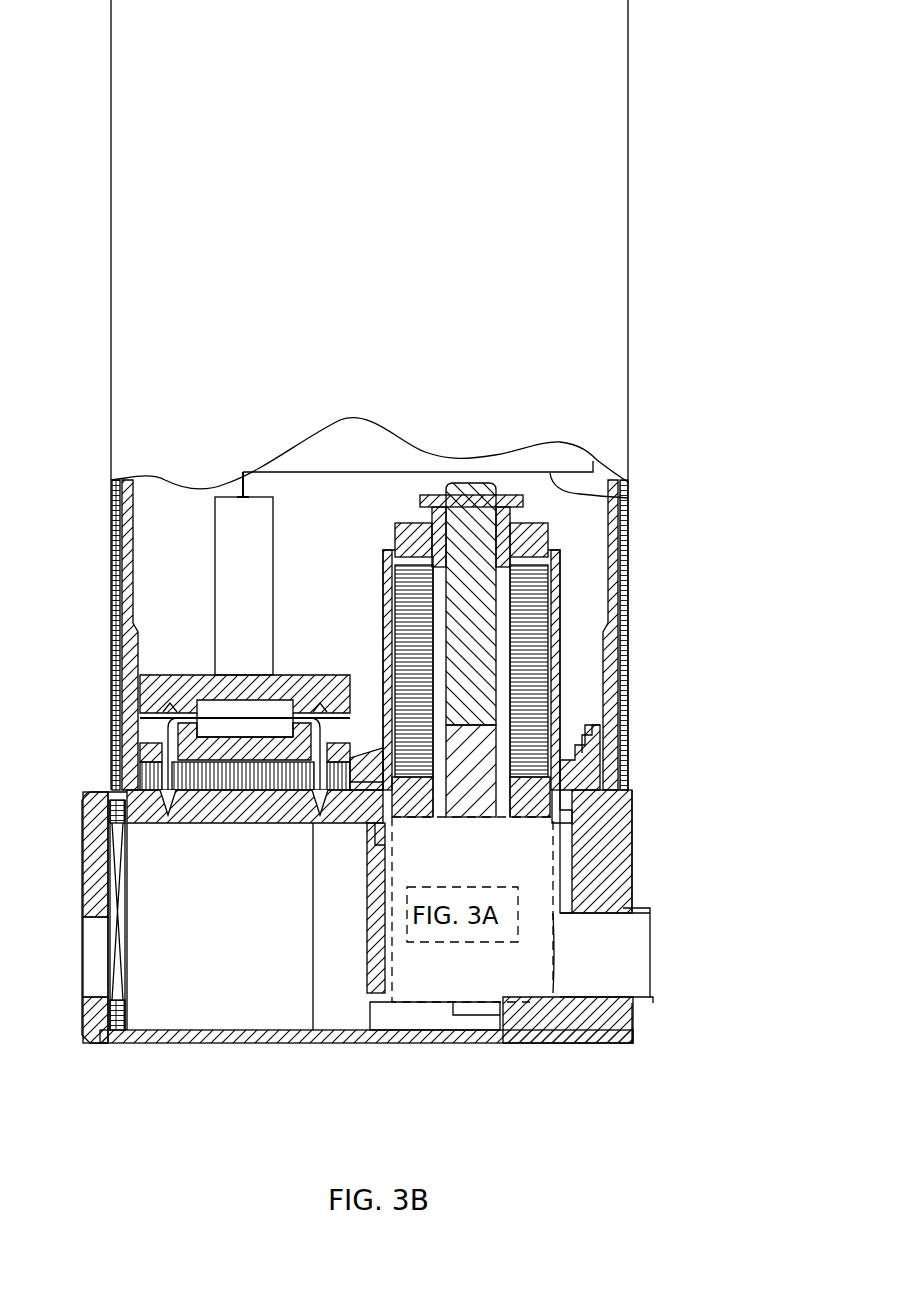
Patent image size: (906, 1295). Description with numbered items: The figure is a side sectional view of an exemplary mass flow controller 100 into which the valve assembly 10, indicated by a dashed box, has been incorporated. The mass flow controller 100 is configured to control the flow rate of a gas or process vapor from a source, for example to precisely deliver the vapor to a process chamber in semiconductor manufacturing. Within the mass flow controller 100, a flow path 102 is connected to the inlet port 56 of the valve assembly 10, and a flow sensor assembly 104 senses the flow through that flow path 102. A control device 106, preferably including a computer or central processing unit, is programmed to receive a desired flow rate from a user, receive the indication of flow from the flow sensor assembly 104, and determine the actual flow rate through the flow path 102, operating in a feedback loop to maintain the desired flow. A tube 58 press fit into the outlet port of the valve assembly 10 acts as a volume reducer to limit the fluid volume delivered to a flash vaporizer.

The mass flow controller 100 is at (655, 203).
The control device 106 is at (604, 497).
The valve assembly 10 is at (570, 615).
The flow sensor assembly 104 is at (187, 675).
The tube 58 is at (622, 918).
The flow path 102 is at (270, 1030).
The inlet port 56 is at (382, 1032).